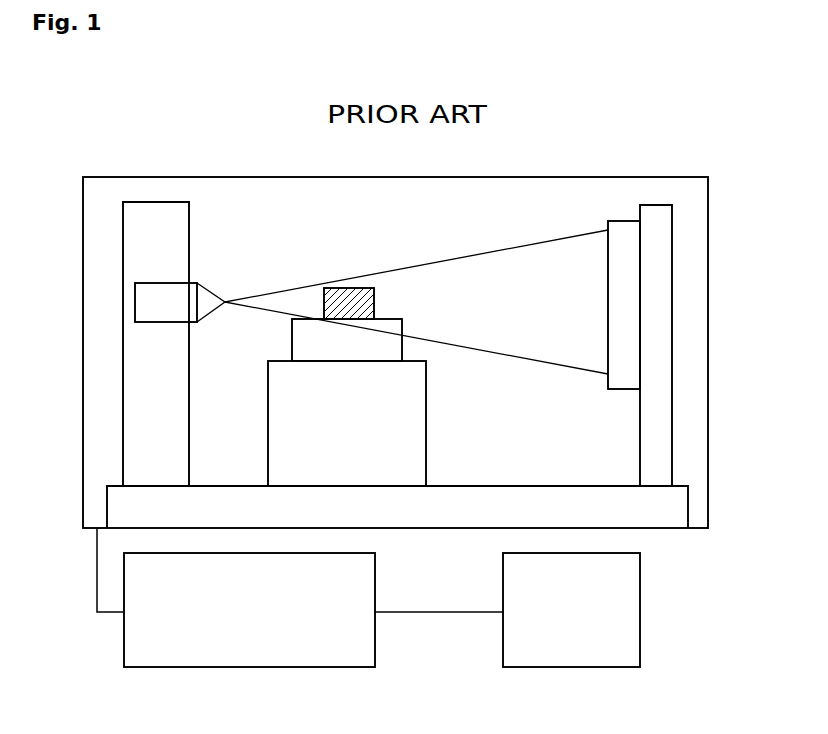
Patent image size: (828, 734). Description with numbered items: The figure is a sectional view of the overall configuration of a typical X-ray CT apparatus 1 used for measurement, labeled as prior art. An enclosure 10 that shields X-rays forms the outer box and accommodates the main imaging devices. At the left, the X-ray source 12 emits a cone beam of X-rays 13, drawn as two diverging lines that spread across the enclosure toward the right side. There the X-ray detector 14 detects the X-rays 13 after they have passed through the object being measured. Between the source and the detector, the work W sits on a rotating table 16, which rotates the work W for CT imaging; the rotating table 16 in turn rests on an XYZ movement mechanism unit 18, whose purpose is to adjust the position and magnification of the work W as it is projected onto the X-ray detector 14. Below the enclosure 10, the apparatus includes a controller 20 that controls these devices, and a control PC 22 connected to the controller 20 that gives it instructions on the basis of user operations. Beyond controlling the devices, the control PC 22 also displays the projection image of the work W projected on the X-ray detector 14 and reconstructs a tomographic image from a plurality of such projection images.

The X-ray CT apparatus 1 is at (650, 150).
The enclosure 10 is at (92, 177).
The X-ray source 12 is at (148, 323).
The X-rays 13 is at (520, 246).
The X-ray detector 14 is at (622, 273).
The work W is at (362, 303).
The rotating table 16 is at (402, 351).
The XYZ movement mechanism unit 18 is at (426, 437).
The controller 20 is at (310, 553).
The control PC 22 is at (592, 553).